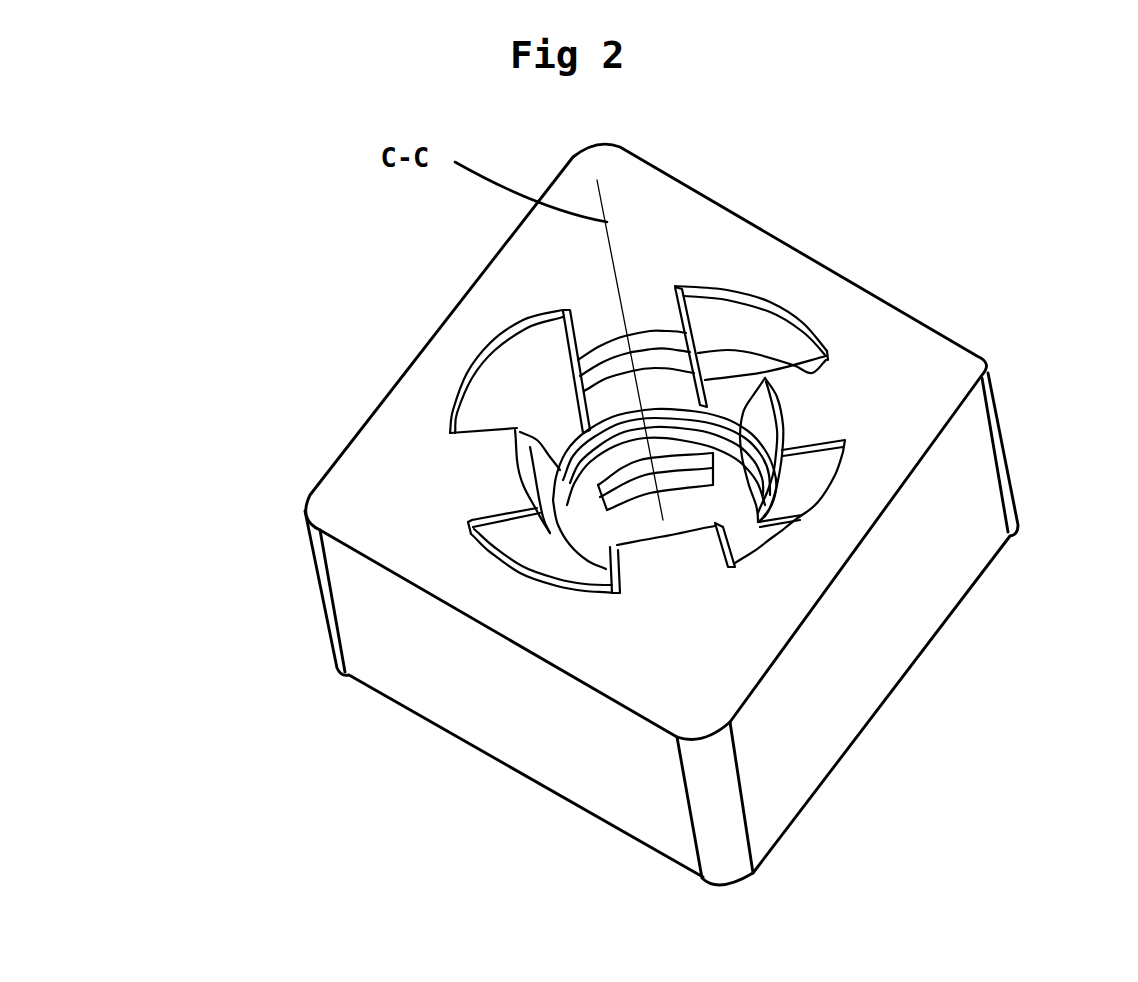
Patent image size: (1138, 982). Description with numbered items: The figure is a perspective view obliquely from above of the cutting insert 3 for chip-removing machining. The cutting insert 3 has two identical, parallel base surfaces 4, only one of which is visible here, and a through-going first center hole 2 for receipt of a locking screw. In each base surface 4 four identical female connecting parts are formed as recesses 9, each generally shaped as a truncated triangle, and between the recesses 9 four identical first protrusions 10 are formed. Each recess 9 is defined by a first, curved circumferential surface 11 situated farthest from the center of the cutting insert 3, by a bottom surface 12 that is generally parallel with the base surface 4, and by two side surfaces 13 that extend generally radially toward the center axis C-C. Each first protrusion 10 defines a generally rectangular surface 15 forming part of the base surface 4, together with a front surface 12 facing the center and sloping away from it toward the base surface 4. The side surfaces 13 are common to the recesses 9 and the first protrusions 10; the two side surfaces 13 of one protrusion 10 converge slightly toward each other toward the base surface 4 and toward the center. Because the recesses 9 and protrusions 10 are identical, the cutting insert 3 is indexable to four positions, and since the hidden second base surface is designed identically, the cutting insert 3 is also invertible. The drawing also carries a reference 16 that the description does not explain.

The first center hole 2 is at (735, 490).
The cutting insert 3 is at (642, 514).
The base surface 4 is at (927, 457).
The recess 9 is at (752, 370).
The first protrusion 10 is at (648, 305).
The first curved circumferential surface 11 is at (793, 343).
The bottom surface 12 is at (763, 375).
The side surface 13 is at (843, 493).
The rectangular surface 15 is at (480, 463).
The left lug 16 is at (625, 390).